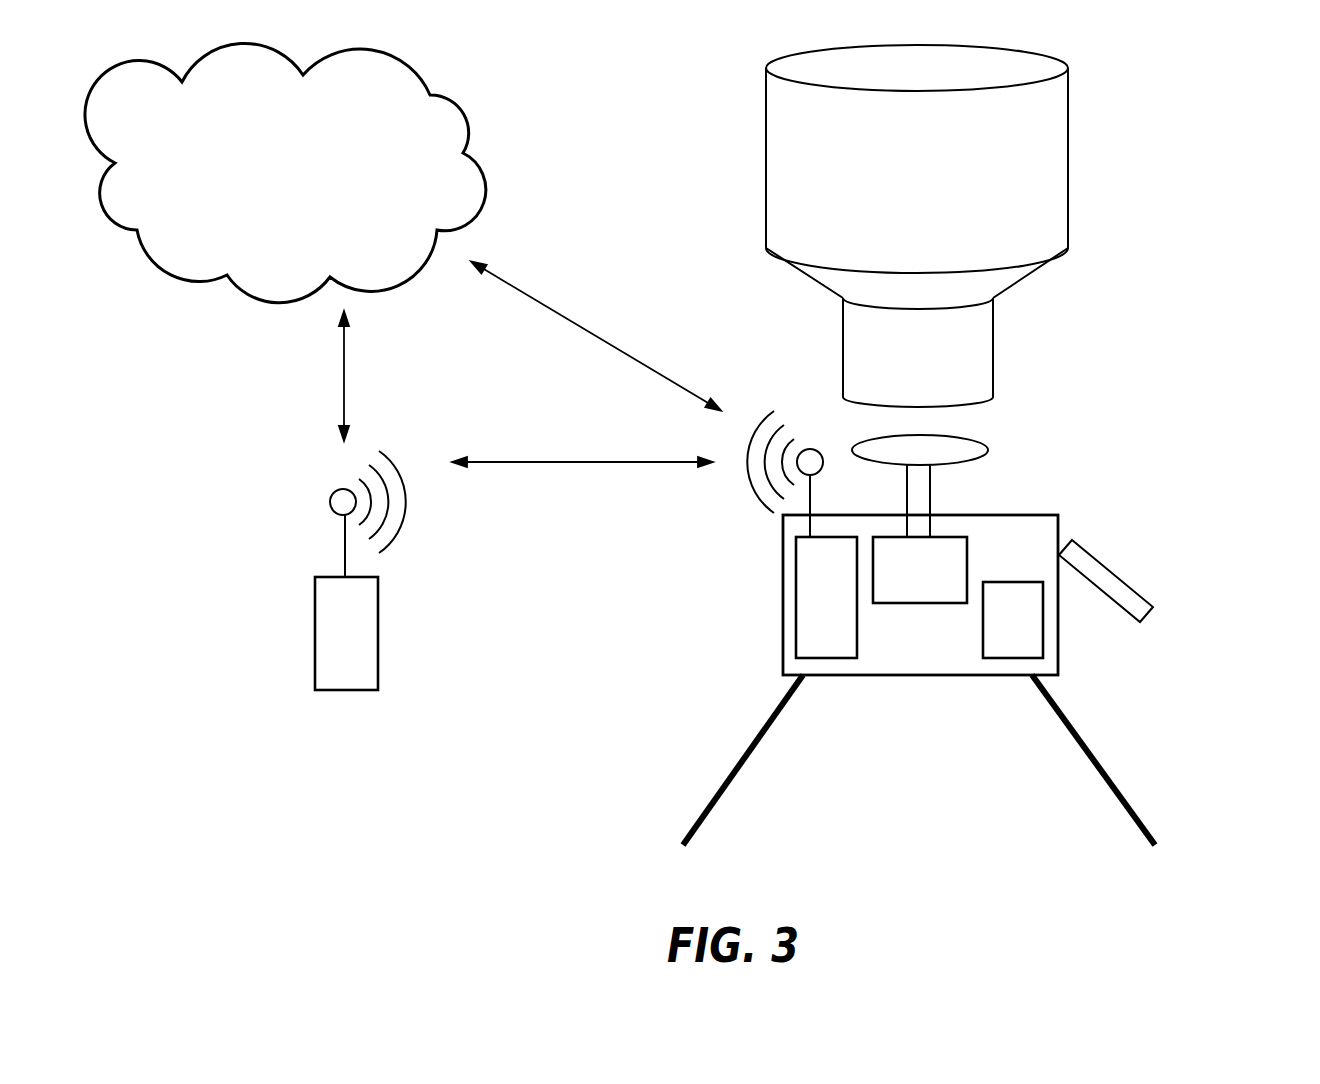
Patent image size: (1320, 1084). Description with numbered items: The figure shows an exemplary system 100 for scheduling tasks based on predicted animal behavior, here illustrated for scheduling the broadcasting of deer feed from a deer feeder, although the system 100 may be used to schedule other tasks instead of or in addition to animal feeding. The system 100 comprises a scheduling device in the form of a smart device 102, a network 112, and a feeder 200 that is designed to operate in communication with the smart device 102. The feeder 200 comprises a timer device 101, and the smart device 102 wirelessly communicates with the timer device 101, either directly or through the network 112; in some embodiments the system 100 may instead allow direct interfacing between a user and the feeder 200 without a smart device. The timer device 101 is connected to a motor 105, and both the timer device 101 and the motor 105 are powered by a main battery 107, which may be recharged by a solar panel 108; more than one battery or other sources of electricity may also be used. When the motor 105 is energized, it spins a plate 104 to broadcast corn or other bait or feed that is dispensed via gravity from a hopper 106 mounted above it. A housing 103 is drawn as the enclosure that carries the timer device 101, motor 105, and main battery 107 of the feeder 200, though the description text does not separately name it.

The system 100 is at (486, 736).
The feeder 200 is at (1150, 242).
The timer device 101 is at (797, 592).
The smart device 102 is at (315, 640).
The housing 103 is at (1060, 532).
The plate 104 is at (988, 453).
The motor 105 is at (917, 603).
The hopper 106 is at (766, 167).
The main battery 107 is at (1022, 660).
The solar panel 108 is at (1117, 602).
The network 112 is at (193, 279).